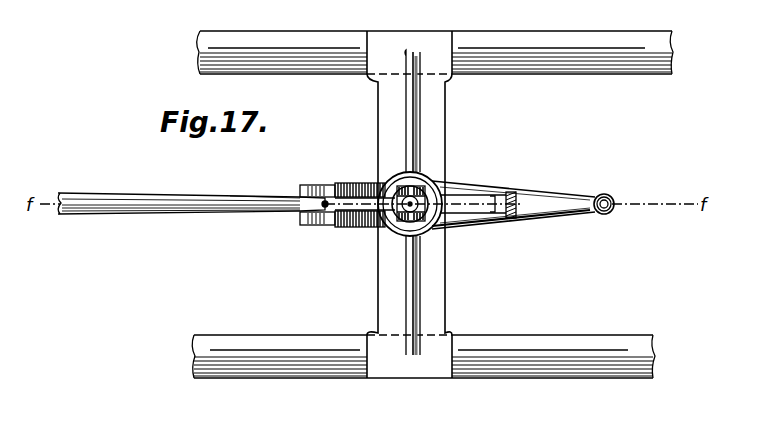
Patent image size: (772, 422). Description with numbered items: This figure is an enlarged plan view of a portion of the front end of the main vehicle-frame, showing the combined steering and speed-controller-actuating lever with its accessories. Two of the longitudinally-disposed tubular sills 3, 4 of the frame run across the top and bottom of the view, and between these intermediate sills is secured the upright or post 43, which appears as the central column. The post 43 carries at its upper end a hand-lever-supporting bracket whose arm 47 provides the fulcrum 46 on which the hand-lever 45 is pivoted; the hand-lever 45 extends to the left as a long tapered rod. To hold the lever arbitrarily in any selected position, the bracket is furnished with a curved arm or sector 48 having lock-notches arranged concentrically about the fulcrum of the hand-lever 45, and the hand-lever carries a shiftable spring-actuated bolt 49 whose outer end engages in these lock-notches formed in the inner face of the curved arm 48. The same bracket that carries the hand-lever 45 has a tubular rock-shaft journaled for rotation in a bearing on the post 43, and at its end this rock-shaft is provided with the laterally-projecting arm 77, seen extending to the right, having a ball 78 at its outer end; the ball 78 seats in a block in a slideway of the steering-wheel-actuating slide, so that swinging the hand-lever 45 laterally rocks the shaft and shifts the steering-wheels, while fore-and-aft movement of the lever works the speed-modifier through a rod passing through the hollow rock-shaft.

The tubular sill 3 is at (500, 343).
The tubular sill 4 is at (500, 42).
The upright or post 43 is at (391, 232).
The hand-lever 45 is at (119, 213).
The fulcrum 46 is at (312, 225).
The arm of hand-lever-supporting bracket 47 is at (351, 227).
The curved arm or sector 48 is at (522, 213).
The shiftable spring-actuated bolt 49 is at (281, 206).
The laterally-projecting arm 77 is at (547, 200).
The ball 78 is at (605, 196).